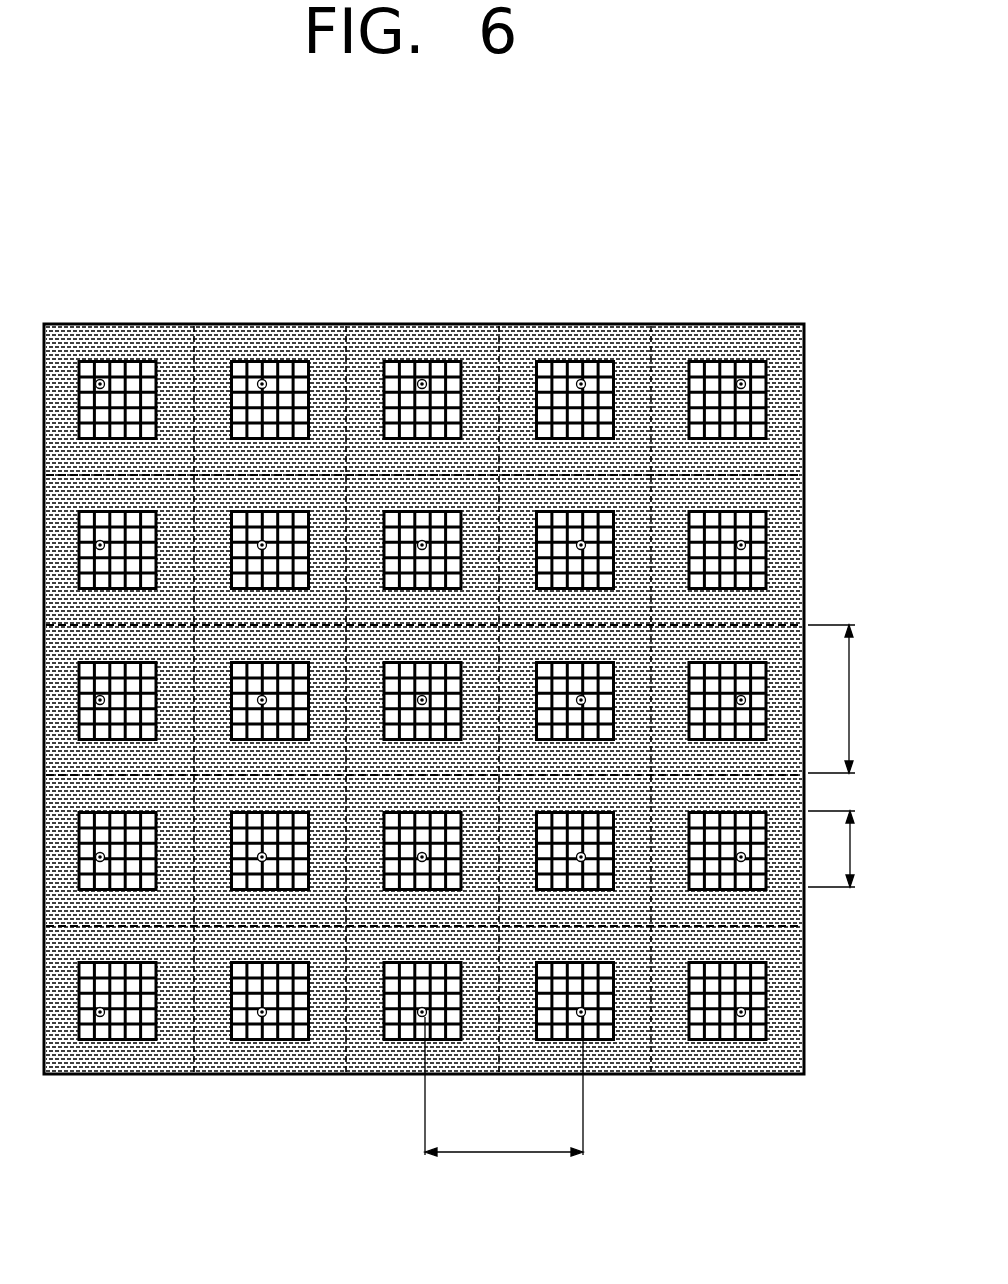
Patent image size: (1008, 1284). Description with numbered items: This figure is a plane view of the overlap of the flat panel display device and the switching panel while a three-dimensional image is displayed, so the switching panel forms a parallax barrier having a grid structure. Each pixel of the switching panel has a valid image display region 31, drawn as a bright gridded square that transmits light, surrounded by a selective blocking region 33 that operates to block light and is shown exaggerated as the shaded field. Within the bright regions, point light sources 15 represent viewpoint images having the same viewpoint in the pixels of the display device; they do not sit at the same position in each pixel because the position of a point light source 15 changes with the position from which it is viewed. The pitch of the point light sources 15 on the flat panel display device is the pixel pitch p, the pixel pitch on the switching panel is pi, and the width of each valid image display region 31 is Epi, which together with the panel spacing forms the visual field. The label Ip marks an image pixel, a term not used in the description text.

The image pixel Ip is at (138, 362).
The point light source 15 is at (580, 383).
The valid image display region 31 is at (588, 370).
The selective blocking region 33 is at (675, 337).
The pixel pitch on the switching panel pi is at (844, 699).
The width of the valid image display region Epi is at (853, 849).
The pixel pitch p is at (504, 1086).